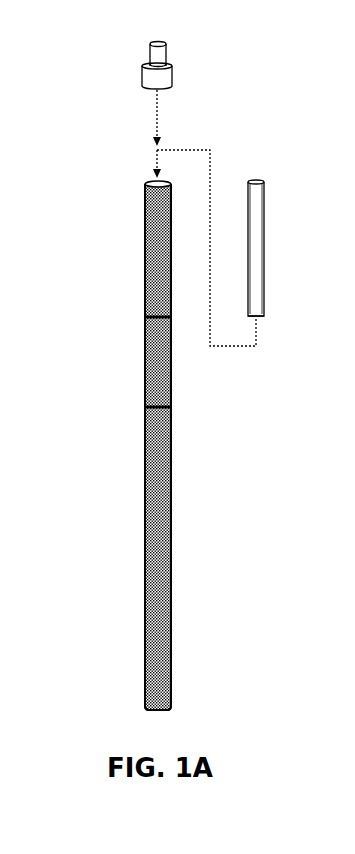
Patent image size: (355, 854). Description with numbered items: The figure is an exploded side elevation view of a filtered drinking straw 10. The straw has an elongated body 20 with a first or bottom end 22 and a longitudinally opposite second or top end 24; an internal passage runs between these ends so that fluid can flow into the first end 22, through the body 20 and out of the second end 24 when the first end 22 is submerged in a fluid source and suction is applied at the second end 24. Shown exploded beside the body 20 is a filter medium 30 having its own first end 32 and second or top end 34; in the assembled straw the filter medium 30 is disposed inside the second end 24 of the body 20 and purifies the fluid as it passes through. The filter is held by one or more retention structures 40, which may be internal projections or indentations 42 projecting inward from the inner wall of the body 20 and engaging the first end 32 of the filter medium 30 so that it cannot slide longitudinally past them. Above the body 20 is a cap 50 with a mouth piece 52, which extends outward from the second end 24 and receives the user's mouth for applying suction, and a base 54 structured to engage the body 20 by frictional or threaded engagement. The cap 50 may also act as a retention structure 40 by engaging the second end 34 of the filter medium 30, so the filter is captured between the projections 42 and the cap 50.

The filtered drinking straw 10 is at (96, 96).
The body 20 is at (170, 438).
The first end 22 is at (148, 712).
The second end 24 is at (145, 181).
The filter medium 30 is at (290, 244).
The first end of the filter medium 32 is at (257, 318).
The second end of the filter medium 34 is at (258, 181).
The retention structure 40 is at (137, 365).
The internal projection 42 is at (160, 318).
The cap 50 is at (178, 60).
The mouth piece 52 is at (149, 46).
The base 54 is at (172, 72).